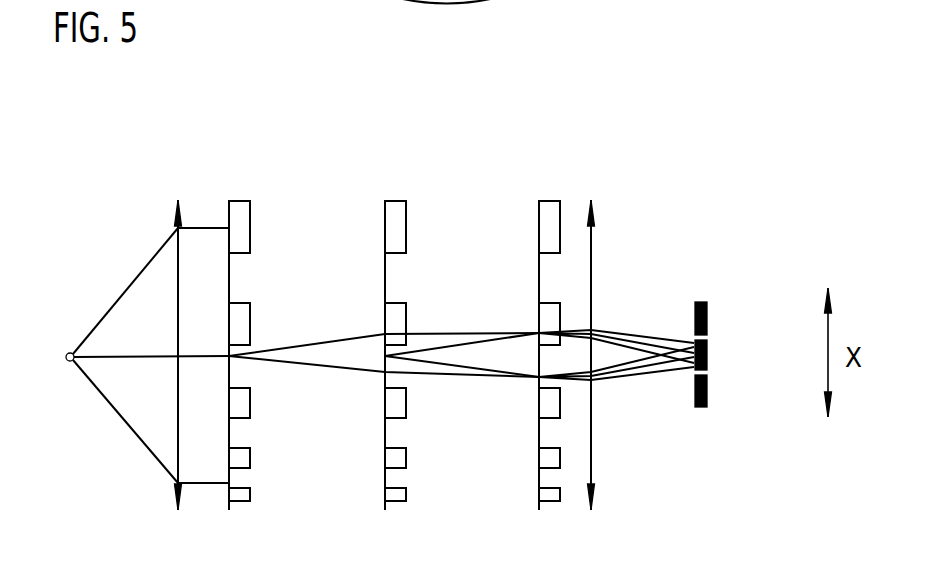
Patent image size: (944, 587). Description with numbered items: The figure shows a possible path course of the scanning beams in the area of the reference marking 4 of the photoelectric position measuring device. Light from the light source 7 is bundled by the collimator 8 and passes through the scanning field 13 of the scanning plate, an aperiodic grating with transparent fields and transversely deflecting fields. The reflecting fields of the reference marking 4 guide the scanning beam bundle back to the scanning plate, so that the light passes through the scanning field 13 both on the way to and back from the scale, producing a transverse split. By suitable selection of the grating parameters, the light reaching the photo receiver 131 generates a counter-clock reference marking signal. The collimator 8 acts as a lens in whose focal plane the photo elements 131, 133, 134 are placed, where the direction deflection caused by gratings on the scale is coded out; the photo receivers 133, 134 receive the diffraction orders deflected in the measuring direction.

The light source 7 is at (68, 352).
The collimator 8 is at (176, 470).
The scanning field 13 is at (229, 493).
The reference marking 4 is at (385, 480).
The photo receiver 131 is at (707, 352).
The photo receiver 133 is at (707, 312).
The photo receiver 134 is at (707, 392).